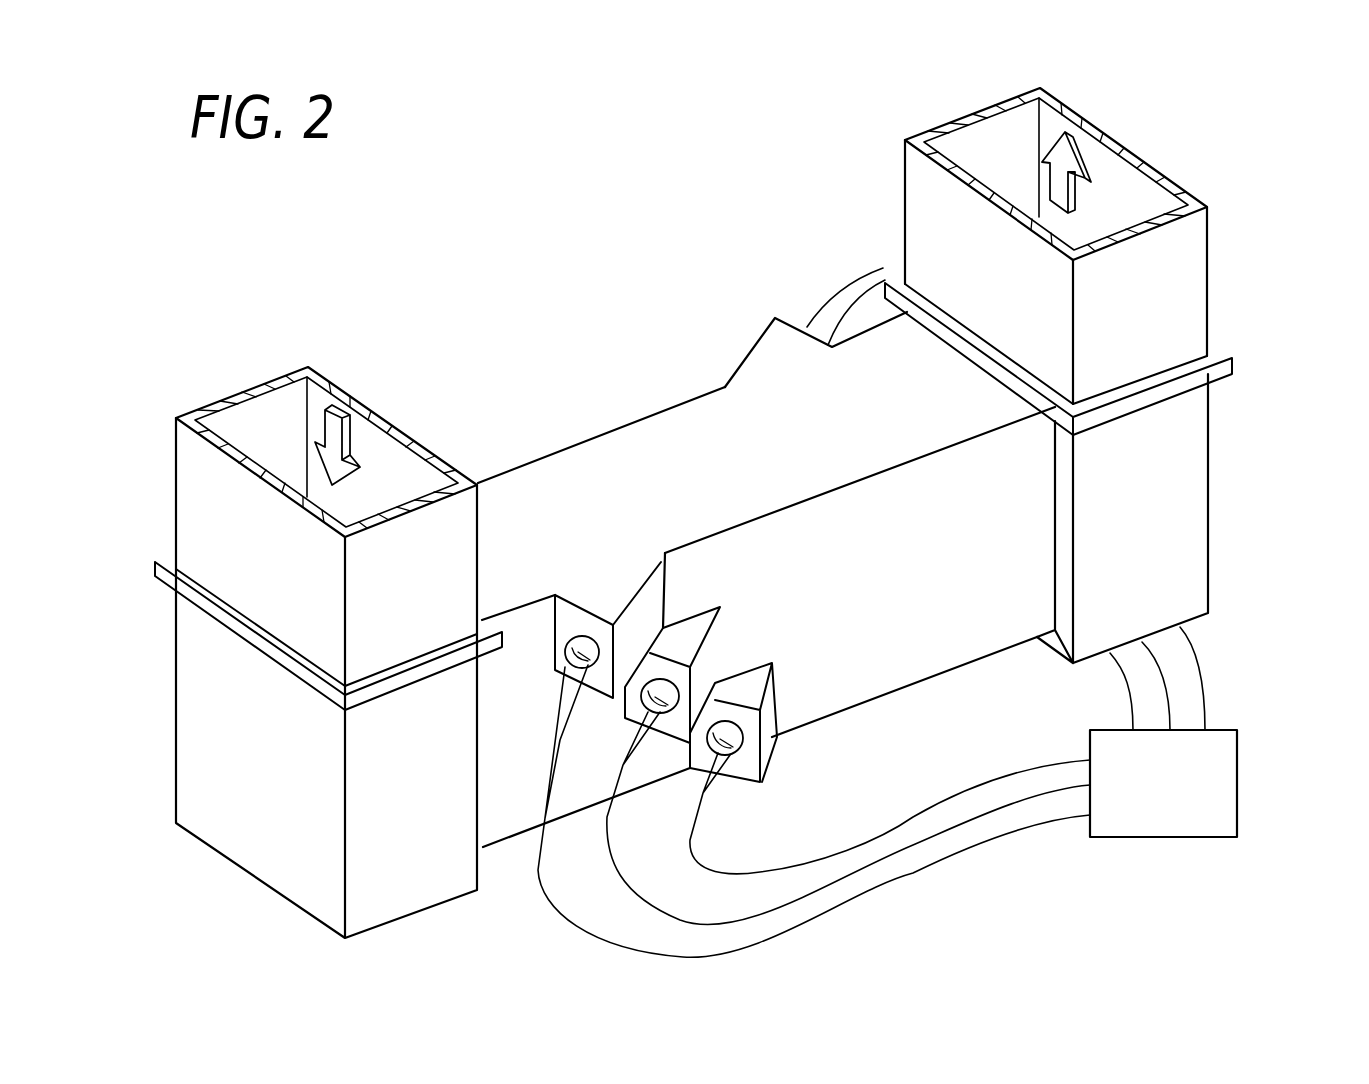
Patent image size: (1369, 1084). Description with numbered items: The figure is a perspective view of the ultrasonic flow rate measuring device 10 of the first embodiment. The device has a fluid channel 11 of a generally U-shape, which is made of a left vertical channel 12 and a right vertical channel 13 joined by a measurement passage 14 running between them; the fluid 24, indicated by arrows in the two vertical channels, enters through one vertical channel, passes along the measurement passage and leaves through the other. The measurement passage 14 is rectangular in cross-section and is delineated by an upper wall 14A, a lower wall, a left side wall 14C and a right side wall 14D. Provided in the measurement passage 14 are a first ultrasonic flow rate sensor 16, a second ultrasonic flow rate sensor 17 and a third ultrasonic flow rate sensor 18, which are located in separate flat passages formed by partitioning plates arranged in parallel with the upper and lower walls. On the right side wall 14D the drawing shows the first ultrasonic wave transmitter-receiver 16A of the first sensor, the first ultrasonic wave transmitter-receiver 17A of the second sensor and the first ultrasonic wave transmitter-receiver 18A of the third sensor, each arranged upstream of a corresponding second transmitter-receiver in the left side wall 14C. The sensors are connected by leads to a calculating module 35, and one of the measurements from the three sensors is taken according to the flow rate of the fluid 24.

The ultrasonic flow rate measuring device 10 is at (650, 227).
The fluid channel 11 is at (1158, 165).
The left vertical channel 12 is at (200, 715).
The right vertical channel 13 is at (1190, 500).
The measurement passage 14 is at (766, 557).
The upper wall 14A is at (717, 437).
The left side wall 14C is at (620, 423).
The right side wall 14D is at (947, 637).
The first ultrasonic flow rate sensor 16 is at (573, 603).
The first ultrasonic wave transmitter-receiver 16A is at (585, 634).
The second ultrasonic flow rate sensor 17 is at (601, 663).
The first ultrasonic wave transmitter-receiver 17A is at (648, 703).
The third ultrasonic flow rate sensor 18 is at (781, 687).
The first ultrasonic wave transmitter-receiver 18A is at (742, 731).
The fluid 24 is at (320, 380).
The calculating module 35 is at (1153, 827).